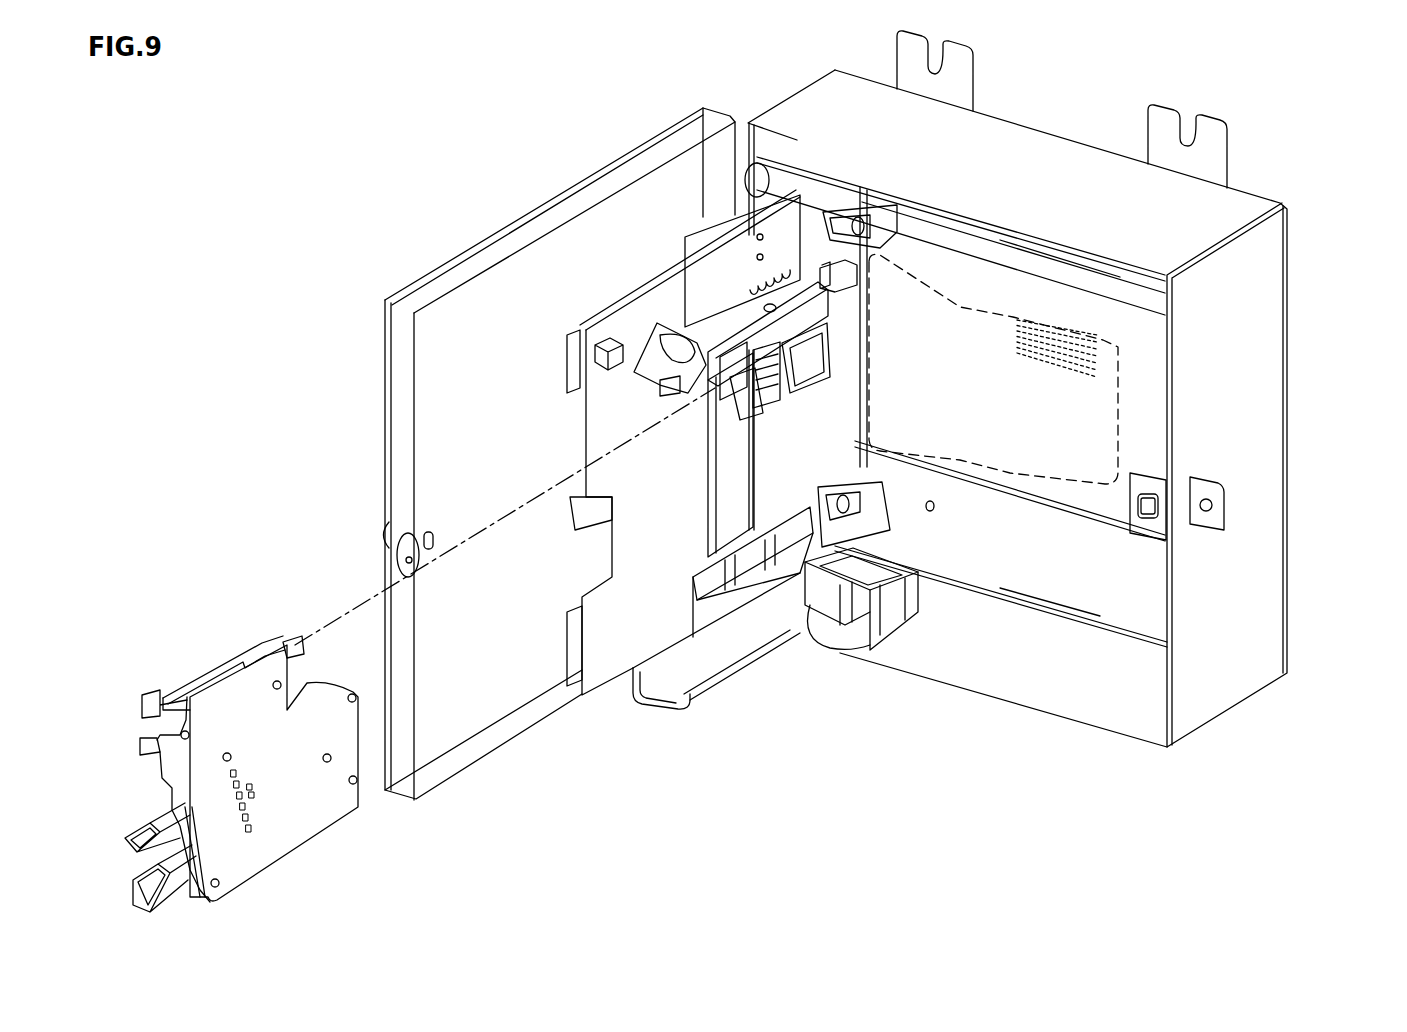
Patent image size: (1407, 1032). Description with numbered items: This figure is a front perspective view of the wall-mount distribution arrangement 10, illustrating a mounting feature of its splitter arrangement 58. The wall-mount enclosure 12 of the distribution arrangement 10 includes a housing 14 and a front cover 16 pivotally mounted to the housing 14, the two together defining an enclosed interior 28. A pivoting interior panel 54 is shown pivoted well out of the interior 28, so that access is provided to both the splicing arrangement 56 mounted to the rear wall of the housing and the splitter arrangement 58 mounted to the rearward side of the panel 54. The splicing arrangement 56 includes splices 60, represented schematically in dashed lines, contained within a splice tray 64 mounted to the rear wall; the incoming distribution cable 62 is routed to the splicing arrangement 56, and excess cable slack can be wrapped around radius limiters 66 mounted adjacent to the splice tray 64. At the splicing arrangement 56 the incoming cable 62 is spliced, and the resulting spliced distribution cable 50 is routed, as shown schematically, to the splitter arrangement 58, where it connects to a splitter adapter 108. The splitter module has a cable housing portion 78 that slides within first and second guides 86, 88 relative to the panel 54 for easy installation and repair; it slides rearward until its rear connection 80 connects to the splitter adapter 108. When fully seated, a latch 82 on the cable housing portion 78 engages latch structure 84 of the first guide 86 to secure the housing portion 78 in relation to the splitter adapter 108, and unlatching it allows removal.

The distribution arrangement 10 is at (401, 134).
The wall-mount enclosure 12 is at (592, 425).
The housing 14 is at (1069, 389).
The front cover 16 is at (525, 225).
The interior 28 is at (1068, 565).
The spliced distribution cable 50 is at (1007, 472).
The interior panel 54 is at (610, 655).
The splicing arrangement 56 is at (1089, 544).
The splitter arrangement 58 is at (475, 504).
The splices 60 is at (1085, 337).
The incoming distribution cable 62 is at (960, 300).
The splice tray 64 is at (1047, 292).
The radius limiters 66 is at (868, 198).
The cable housing portion 78 is at (293, 828).
The rear connection 80 is at (295, 638).
The latch 82 is at (150, 692).
The latch structure 84 is at (628, 393).
The first guide 86 is at (735, 330).
The second guide 88 is at (765, 555).
The splitter adapter 108 is at (810, 373).